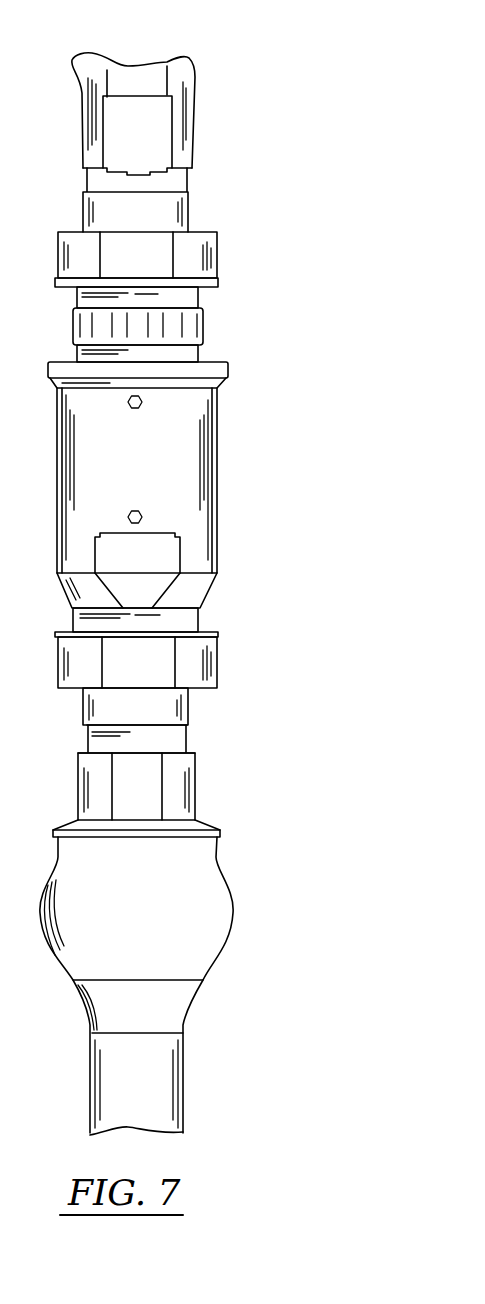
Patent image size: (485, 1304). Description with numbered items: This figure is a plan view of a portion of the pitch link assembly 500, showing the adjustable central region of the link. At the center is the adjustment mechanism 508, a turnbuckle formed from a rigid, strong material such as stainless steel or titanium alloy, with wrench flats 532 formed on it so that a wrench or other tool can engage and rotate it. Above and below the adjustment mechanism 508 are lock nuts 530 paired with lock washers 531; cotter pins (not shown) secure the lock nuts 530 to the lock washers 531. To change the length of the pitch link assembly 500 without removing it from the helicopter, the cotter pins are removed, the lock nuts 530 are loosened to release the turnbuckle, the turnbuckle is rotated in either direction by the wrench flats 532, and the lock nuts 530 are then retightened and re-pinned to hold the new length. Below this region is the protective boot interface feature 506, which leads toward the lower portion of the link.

The pitch link assembly 500 is at (158, 32).
The protective boot interface feature 506 is at (200, 942).
The adjustment mechanism 508 is at (200, 457).
The lock nuts 530 is at (213, 252).
The lock washers 531 is at (198, 297).
The wrench flats 532 is at (167, 552).